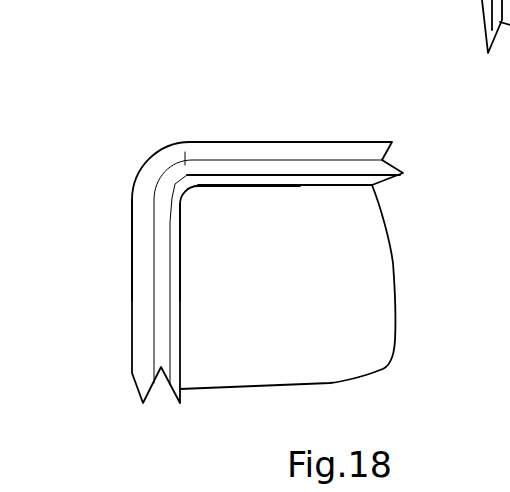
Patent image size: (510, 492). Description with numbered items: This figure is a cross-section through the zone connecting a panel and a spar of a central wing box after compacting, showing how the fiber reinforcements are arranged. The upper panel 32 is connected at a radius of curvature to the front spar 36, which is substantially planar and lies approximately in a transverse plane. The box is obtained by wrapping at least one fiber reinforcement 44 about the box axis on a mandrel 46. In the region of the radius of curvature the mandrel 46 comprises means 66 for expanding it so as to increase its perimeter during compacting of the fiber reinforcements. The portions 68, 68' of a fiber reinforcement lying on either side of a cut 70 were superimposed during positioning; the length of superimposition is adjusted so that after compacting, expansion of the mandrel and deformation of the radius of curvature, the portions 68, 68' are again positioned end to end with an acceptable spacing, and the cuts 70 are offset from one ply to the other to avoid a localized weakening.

The upper panel 32 is at (340, 139).
The front spar 36 is at (132, 306).
The fiber reinforcement 44 is at (153, 285).
The mandrel 46 is at (352, 255).
The means for expanding the mandrel 66 is at (168, 148).
The portion of the fiber reinforcement 68 is at (164, 152).
The portion of the fiber reinforcement 68' is at (185, 216).
The cut 70 is at (263, 172).